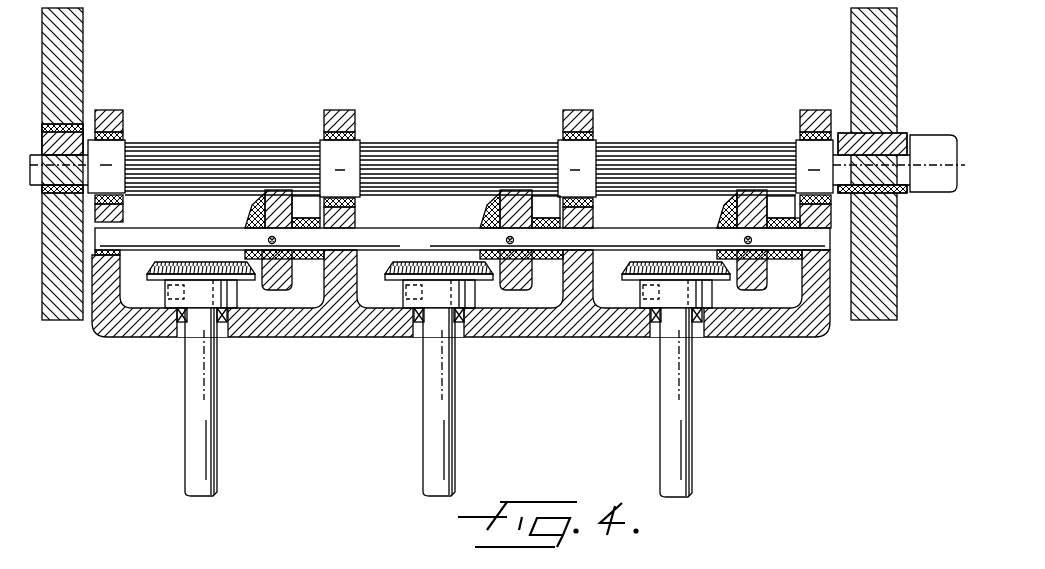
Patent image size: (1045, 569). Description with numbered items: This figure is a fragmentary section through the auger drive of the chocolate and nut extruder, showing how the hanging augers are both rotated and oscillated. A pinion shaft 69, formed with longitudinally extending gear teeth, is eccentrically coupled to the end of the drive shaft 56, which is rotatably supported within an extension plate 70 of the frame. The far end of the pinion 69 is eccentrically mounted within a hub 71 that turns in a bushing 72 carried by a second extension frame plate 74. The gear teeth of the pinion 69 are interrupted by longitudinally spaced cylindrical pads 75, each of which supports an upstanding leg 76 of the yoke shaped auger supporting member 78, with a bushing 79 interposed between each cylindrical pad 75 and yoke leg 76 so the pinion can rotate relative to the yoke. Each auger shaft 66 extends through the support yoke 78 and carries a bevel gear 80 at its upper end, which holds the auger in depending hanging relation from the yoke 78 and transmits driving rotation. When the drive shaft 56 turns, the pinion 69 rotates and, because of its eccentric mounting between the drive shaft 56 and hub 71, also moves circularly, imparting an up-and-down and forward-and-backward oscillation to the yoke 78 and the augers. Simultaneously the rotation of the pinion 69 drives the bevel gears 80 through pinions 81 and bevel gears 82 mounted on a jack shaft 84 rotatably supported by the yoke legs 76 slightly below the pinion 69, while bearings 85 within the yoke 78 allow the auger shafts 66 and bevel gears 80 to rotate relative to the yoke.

The drive shaft 56 is at (933, 192).
The central shaft 66 is at (203, 412).
The pinion shaft 69 is at (473, 148).
The extension plate 70 is at (888, 62).
The hub 71 is at (58, 135).
The bushing 72 is at (70, 202).
The second extension frame plate 74 is at (82, 40).
The cylindrical pads 75 is at (115, 148).
The upstanding leg 76 is at (120, 115).
The yoke shaped auger supporting member 78 is at (593, 335).
The bushing 79 is at (325, 128).
The bevel gear 80 is at (642, 265).
The pinions 81 is at (283, 290).
The bevel gears 82 is at (247, 213).
The jack shaft 84 is at (407, 233).
The bearings 85 is at (222, 313).